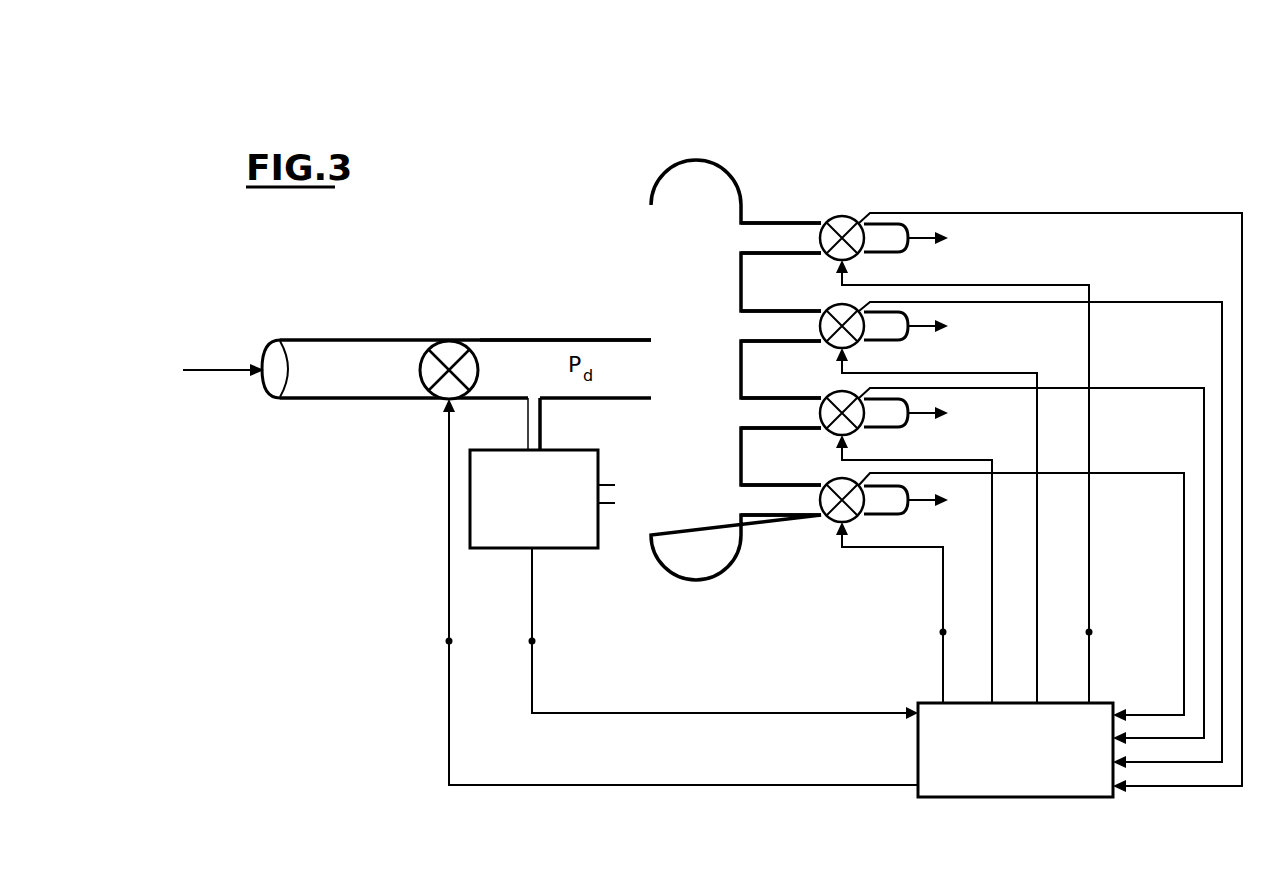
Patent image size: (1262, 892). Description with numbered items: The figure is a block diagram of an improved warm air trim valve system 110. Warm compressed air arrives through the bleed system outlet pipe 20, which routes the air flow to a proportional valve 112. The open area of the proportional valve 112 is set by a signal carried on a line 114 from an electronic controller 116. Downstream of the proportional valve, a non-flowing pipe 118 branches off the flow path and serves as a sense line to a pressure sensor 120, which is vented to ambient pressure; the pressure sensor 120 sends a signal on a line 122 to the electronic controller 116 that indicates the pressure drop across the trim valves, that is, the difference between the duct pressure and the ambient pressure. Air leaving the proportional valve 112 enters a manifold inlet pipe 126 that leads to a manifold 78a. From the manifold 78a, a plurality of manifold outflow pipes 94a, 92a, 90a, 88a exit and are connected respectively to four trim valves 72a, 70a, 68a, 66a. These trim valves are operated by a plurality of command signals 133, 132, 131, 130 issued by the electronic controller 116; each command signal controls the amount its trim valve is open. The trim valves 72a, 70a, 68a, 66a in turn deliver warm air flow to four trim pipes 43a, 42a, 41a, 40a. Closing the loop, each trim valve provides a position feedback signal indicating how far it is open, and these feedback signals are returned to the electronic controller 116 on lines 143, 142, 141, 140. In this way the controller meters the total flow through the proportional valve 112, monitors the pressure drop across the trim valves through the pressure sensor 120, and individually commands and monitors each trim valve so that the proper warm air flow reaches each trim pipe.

The warm air trim valve system 110 is at (999, 98).
The bleed system outlet pipe 20 is at (298, 392).
The manifold inlet pipe 126 is at (537, 350).
The proportional valve 112 is at (447, 342).
The non-flowing pipe 118 is at (543, 429).
The pressure sensor 120 is at (568, 550).
The line 122 is at (536, 641).
The line 114 is at (446, 641).
The electronic controller 116 is at (958, 798).
The manifold 78a is at (682, 176).
The manifold outflow pipe 94a is at (782, 254).
The manifold outflow pipe 92a is at (782, 342).
The manifold outflow pipe 90a is at (782, 429).
The manifold outflow pipe 88a is at (782, 516).
The trim valve 72a is at (838, 262).
The trim valve 70a is at (838, 350).
The trim valve 68a is at (838, 437).
The trim valve 66a is at (835, 521).
The trim pipe 43a is at (878, 254).
The trim pipe 42a is at (878, 342).
The trim pipe 41a is at (878, 429).
The trim pipe 40a is at (878, 516).
The command signal 133 is at (1089, 632).
The command signal 132 is at (1041, 550).
The command signal 131 is at (997, 550).
The command signal 130 is at (943, 632).
The position feedback line 143 is at (1160, 218).
The position feedback line 142 is at (1136, 307).
The position feedback line 141 is at (1119, 393).
The position feedback line 140 is at (1106, 478).